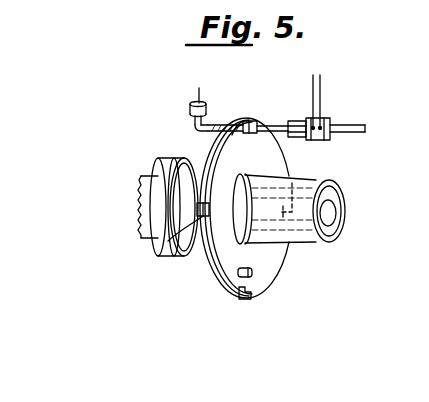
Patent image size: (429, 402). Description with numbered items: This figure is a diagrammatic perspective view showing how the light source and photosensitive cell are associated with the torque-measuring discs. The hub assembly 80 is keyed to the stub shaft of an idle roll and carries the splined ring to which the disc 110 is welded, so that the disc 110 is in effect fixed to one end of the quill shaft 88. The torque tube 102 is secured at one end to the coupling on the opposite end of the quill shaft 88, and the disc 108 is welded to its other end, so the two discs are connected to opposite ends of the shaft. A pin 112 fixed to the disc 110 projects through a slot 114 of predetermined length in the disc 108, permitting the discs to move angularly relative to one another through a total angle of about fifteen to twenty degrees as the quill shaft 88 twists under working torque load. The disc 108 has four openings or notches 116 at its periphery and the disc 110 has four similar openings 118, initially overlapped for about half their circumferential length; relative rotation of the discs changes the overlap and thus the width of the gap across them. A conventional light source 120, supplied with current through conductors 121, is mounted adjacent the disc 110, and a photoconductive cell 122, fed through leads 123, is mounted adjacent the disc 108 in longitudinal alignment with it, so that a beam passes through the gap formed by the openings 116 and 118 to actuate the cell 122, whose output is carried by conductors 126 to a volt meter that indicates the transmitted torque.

The hub assembly 80 is at (172, 154).
The quill shaft 88 is at (333, 211).
The torque tube 102 is at (330, 182).
The disc 108 is at (277, 255).
The disc 110 is at (202, 267).
The pin 112 is at (247, 267).
The slot 114 is at (230, 295).
The openings or notches 116 is at (246, 122).
The openings or notches 118 is at (236, 118).
The light source 120 is at (190, 113).
The conductors 121 is at (199, 103).
The photoconductive cell 122 is at (315, 139).
The leads 123 is at (347, 121).
The conductors 126 is at (328, 96).